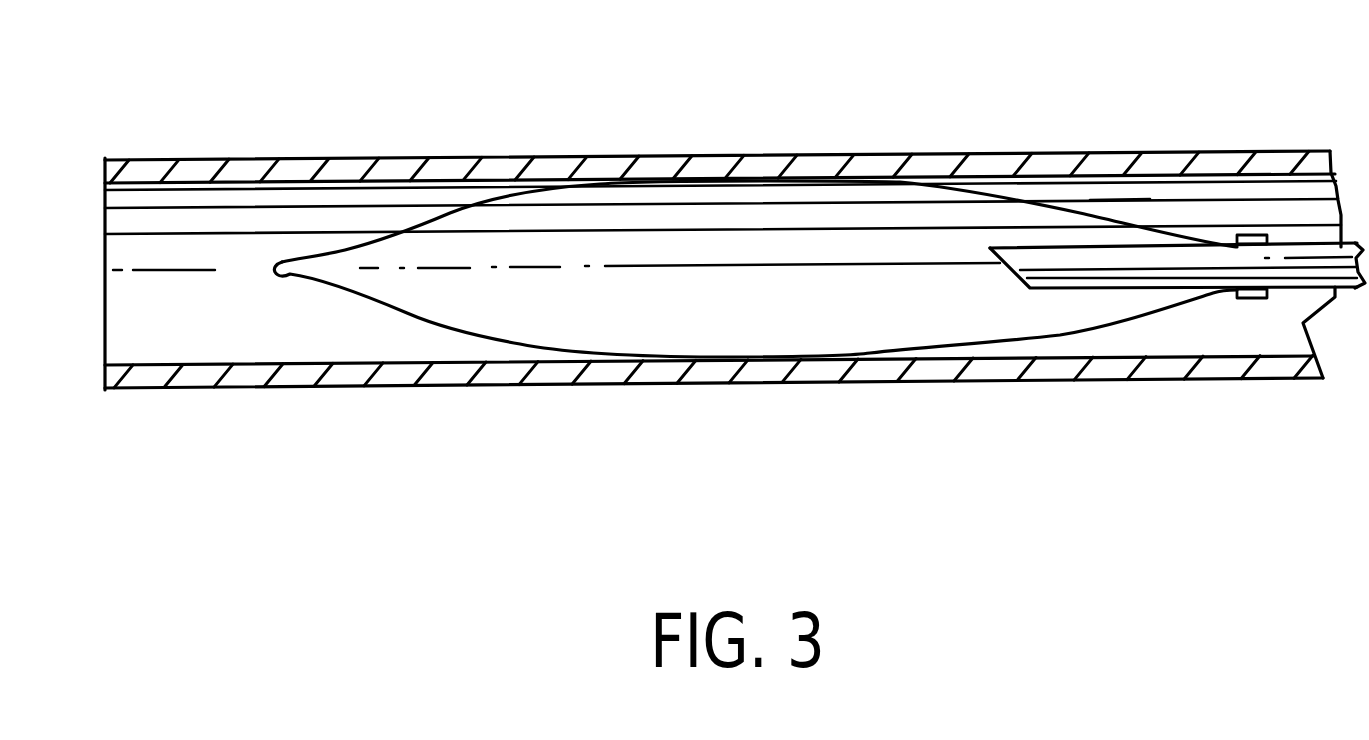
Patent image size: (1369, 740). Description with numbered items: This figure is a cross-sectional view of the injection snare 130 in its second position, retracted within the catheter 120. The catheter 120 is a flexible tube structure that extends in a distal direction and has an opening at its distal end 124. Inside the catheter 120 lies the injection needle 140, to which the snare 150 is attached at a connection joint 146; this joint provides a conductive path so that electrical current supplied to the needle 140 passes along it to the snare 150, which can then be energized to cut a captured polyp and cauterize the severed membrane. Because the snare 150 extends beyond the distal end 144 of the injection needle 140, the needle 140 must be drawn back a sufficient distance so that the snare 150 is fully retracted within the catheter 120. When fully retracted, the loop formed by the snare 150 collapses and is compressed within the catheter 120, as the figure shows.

The catheter 120 is at (335, 160).
The distal end of the catheter 124 is at (104, 160).
The injection snare 130 is at (1118, 202).
The injection needle 140 is at (1303, 290).
The distal end of injection needle 144 is at (1108, 295).
The connection joint 146 is at (1252, 235).
The snare 150 is at (395, 313).